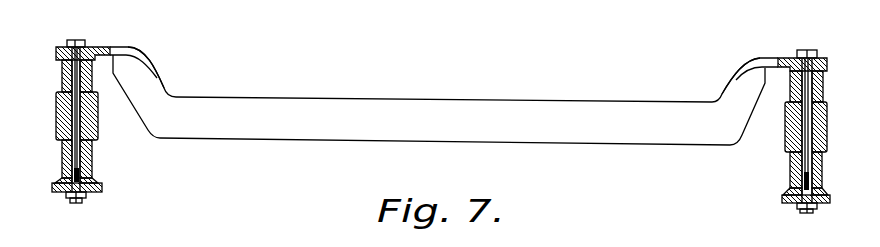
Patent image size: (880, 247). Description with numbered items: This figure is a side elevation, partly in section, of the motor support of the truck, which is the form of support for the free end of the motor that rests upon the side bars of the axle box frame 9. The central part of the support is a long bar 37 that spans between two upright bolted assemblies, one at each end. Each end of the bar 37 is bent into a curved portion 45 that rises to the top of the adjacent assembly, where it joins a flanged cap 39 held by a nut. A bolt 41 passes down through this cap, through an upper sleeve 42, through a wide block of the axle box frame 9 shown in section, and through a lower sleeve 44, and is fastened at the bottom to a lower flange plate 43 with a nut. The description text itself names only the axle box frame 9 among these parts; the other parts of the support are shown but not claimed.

The axle box frame 9 is at (98, 112).
The cross bar 37 is at (444, 96).
The top flange with nut 39 is at (796, 58).
The bolt 41 is at (84, 128).
The upper sleeve 42 is at (62, 71).
The lower flange plate 43 is at (102, 189).
The lower sleeve 44 is at (95, 162).
The curved bar end 45 is at (153, 73).